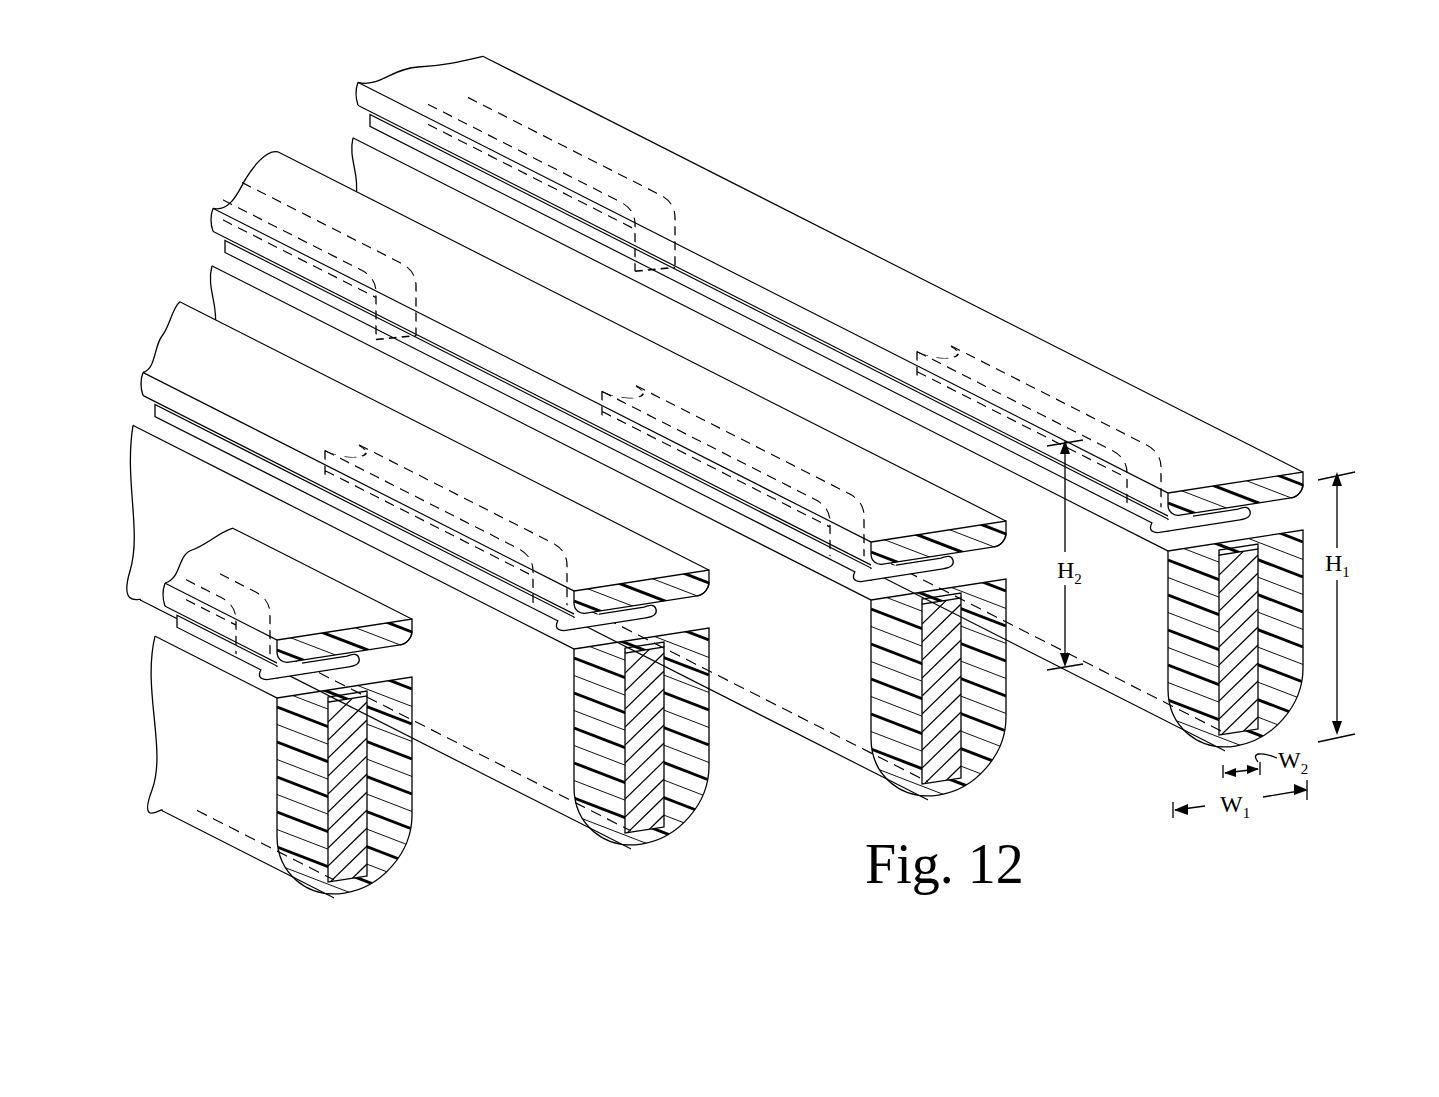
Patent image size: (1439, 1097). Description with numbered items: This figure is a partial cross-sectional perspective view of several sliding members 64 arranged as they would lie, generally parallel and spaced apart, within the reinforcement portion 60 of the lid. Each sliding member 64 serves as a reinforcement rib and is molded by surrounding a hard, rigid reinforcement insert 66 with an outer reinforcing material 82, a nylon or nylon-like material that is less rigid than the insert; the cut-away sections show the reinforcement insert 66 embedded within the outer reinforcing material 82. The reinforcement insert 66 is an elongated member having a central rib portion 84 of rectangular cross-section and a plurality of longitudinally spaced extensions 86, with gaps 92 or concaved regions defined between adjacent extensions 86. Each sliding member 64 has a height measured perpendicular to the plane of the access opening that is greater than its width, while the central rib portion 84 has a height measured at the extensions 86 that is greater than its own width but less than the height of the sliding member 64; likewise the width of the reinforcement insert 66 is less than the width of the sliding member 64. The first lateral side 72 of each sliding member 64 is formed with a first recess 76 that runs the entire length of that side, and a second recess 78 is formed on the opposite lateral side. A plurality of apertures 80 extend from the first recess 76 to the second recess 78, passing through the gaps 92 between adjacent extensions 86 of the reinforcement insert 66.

The reinforcement portion 60 is at (741, 495).
The sliding member 64 is at (1395, 737).
The reinforcement insert 66 is at (1244, 694).
The first lateral side 72 is at (1112, 665).
The first recess 76 is at (897, 408).
The second recess 78 is at (1295, 500).
The aperture 80 is at (788, 352).
The outer reinforcing material 82 is at (1278, 688).
The central rib portion 84 is at (1050, 610).
The extension 86 is at (1030, 372).
The gap 92 is at (700, 265).